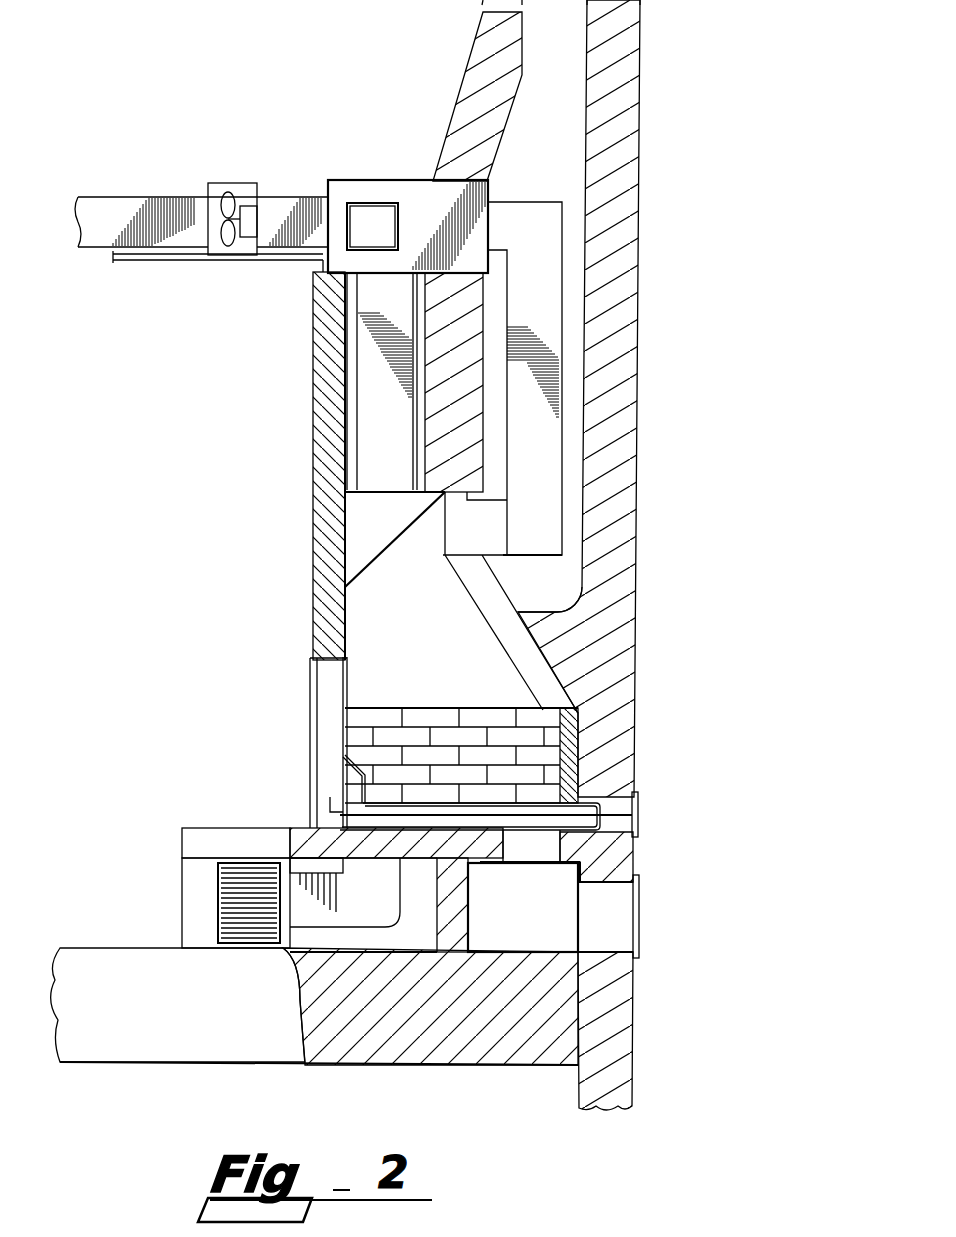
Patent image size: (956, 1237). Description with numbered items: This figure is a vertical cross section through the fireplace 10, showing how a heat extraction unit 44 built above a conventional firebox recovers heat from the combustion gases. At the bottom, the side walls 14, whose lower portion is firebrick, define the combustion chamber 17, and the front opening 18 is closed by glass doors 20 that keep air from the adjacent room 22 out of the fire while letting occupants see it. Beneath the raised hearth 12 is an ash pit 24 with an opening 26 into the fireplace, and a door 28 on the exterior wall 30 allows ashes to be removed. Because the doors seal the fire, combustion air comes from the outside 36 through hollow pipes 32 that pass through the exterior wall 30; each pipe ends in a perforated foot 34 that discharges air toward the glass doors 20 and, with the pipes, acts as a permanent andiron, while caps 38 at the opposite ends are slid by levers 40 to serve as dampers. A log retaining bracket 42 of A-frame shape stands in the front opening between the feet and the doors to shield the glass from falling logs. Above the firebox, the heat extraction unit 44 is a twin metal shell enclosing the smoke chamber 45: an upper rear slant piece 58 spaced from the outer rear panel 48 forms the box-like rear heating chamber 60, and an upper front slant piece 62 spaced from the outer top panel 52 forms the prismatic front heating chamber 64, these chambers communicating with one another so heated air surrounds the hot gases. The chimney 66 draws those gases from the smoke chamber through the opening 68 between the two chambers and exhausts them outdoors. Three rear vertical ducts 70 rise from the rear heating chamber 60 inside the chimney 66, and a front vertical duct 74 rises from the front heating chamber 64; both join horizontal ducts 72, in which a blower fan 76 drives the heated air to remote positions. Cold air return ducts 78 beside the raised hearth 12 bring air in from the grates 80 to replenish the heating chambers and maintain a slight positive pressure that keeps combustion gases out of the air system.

The fireplace 10 is at (213, 540).
The raised hearth 12 is at (227, 837).
The side walls 14 is at (548, 757).
The combustion chamber 17 is at (458, 763).
The front opening 18 is at (305, 660).
The glass doors 20 is at (310, 733).
The room 22 is at (136, 614).
The ash pit 24 is at (528, 928).
The opening 26 is at (542, 847).
The door 28 is at (639, 912).
The exterior wall 30 is at (618, 858).
The hollow pipes 32 is at (618, 815).
The foot 34 is at (353, 783).
The outside 36 is at (756, 431).
The caps 38 is at (640, 825).
The levers 40 is at (330, 805).
The log retaining bracket 42 is at (345, 689).
The heat extraction unit 44 is at (548, 652).
The smoke chamber 45 is at (441, 655).
The outer rear panel 48 is at (563, 687).
The outer top panel 52 is at (381, 490).
The upper rear slant piece 58 is at (465, 595).
The rear heating chamber 60 is at (523, 642).
The upper front slant piece 62 is at (368, 568).
The front heating chamber 64 is at (382, 529).
The chimney 66 is at (563, 78).
The opening 68 is at (445, 515).
The rear vertical ducts 70 is at (530, 213).
The horizontal ducts 72 is at (298, 197).
The front vertical duct 74 is at (368, 403).
The blower fan 76 is at (248, 210).
The cold air return ducts 78 is at (381, 908).
The grates 80 is at (203, 931).